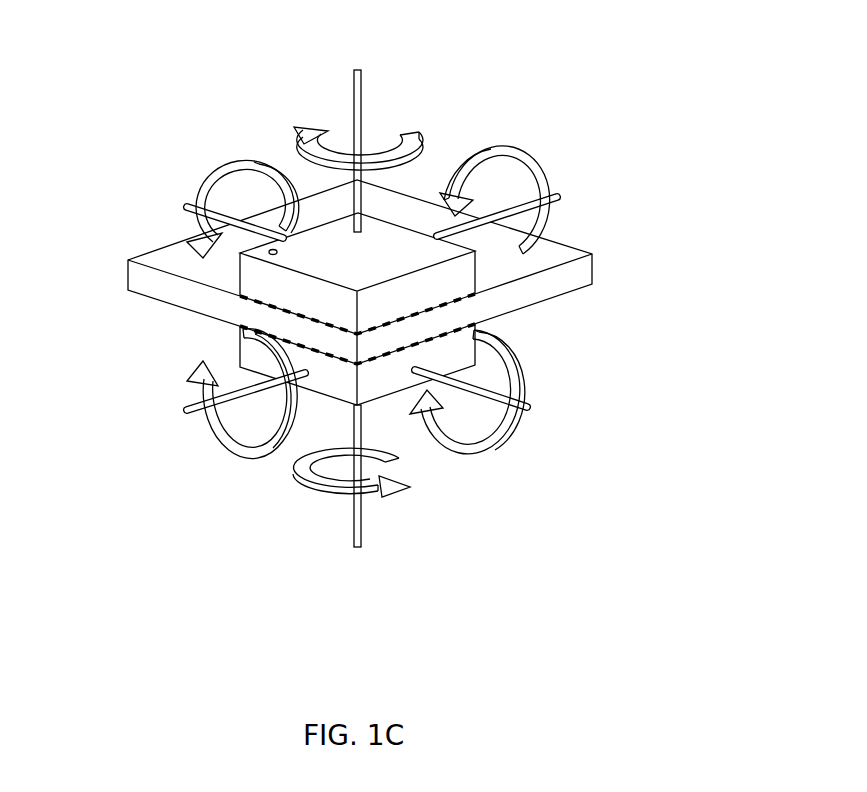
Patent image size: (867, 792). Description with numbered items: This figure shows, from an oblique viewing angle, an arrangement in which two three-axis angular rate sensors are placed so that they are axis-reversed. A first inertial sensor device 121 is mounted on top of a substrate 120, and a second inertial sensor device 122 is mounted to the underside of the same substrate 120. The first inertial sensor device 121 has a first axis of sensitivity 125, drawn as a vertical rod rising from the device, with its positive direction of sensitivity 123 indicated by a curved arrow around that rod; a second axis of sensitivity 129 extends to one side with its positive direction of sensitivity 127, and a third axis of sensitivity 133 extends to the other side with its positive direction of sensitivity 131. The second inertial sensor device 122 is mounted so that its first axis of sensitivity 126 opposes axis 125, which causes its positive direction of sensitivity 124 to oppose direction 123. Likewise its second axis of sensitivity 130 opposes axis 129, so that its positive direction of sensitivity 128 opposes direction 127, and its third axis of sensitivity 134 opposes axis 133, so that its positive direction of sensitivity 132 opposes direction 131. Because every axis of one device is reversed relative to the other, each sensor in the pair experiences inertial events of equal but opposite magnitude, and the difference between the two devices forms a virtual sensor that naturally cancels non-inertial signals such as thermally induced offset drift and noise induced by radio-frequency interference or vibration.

The substrate 120 is at (594, 254).
The first inertial sensor device 121 is at (379, 275).
The second inertial sensor device 122 is at (360, 393).
The positive direction of sensitivity 123 is at (419, 135).
The positive direction of sensitivity 124 is at (293, 472).
The first axis of sensitivity 125 is at (363, 74).
The first axis of sensitivity 126 is at (355, 526).
The positive direction of sensitivity 127 is at (236, 164).
The positive direction of sensitivity 128 is at (500, 445).
The second axis of sensitivity 129 is at (187, 209).
The second axis of sensitivity 130 is at (533, 409).
The positive direction of sensitivity 131 is at (500, 153).
The positive direction of sensitivity 132 is at (217, 440).
The third axis of sensitivity 133 is at (560, 197).
The third axis of sensitivity 134 is at (187, 411).